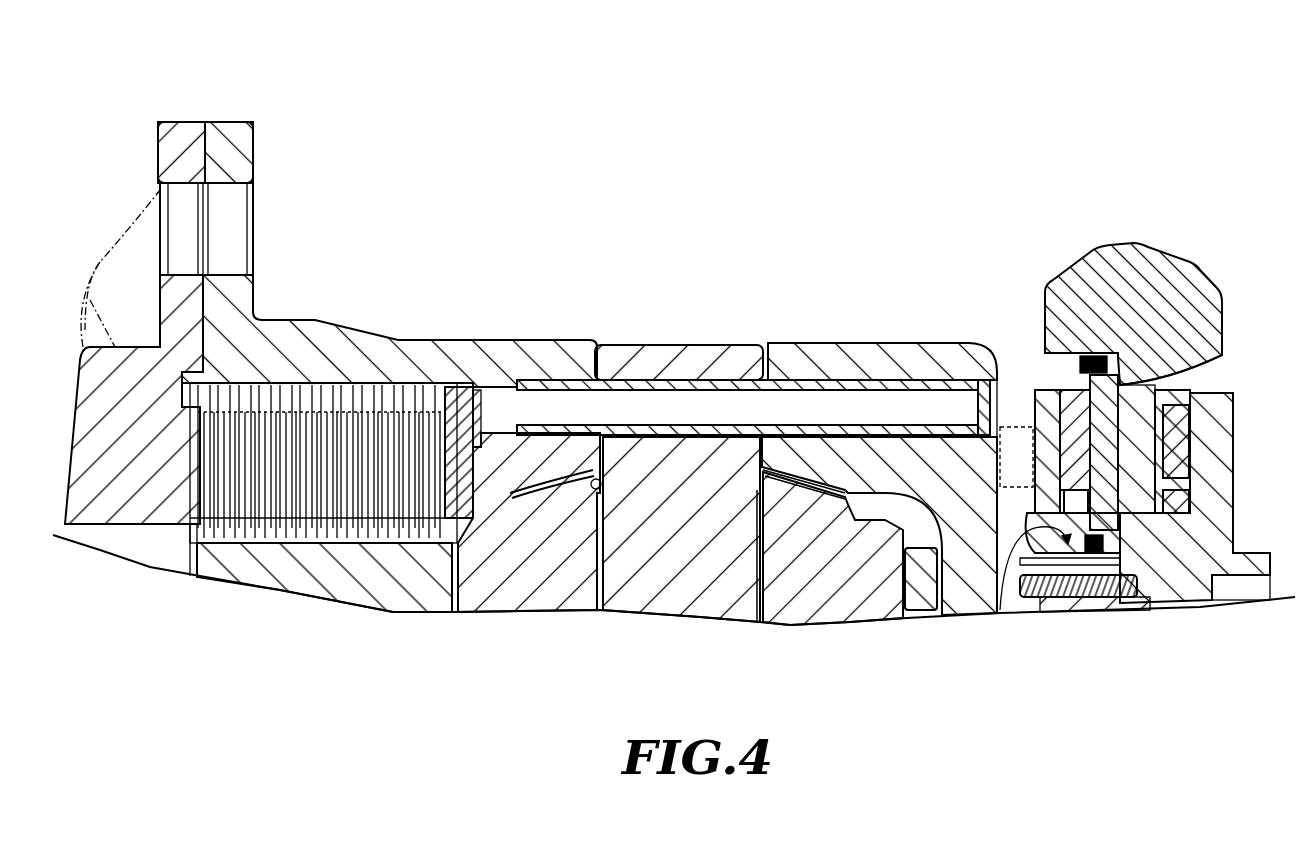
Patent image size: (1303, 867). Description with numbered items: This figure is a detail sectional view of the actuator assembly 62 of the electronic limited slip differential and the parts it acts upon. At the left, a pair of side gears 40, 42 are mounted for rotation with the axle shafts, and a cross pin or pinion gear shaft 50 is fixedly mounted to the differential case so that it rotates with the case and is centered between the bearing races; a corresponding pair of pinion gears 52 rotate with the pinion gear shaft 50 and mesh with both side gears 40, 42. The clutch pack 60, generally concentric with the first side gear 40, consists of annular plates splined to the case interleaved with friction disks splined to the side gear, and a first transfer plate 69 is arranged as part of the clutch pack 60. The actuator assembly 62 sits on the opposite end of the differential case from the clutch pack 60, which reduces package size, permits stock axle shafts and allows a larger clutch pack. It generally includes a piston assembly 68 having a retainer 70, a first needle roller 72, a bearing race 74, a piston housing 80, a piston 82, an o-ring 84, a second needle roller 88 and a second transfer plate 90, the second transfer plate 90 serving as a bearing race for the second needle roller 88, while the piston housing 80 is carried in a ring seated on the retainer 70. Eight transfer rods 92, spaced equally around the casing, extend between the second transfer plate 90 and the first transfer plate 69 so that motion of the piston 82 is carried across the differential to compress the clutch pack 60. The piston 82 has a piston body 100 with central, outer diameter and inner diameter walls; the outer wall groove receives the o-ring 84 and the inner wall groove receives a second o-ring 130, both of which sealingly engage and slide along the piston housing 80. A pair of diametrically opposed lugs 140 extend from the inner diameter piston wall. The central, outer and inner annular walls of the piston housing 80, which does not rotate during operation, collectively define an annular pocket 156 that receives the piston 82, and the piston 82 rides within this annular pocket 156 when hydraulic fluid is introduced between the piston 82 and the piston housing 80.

The side gear 40 is at (352, 575).
The side gear 42 is at (920, 602).
The pinion gear shaft 50 is at (685, 585).
The pinion gears 52 is at (527, 578).
The clutch pack 60 is at (316, 384).
The actuator assembly 62 is at (1230, 319).
The piston assembly 68 is at (1013, 293).
The first transfer plate 69 is at (464, 392).
The retainer 70 is at (1223, 418).
The first needle roller 72 is at (1172, 455).
The bearing race 74 is at (1172, 490).
The piston housing 80 is at (1170, 275).
The piston 82 is at (1122, 384).
The o-ring 84 is at (1093, 358).
The second needle roller 88 is at (1072, 405).
The second transfer plate 90 is at (1040, 410).
The transfer rods 92 is at (1013, 427).
The piston body 100 is at (1108, 527).
The second o-ring 130 is at (1095, 548).
The lugs 140 is at (1040, 560).
The annular pocket 156 is at (1000, 613).